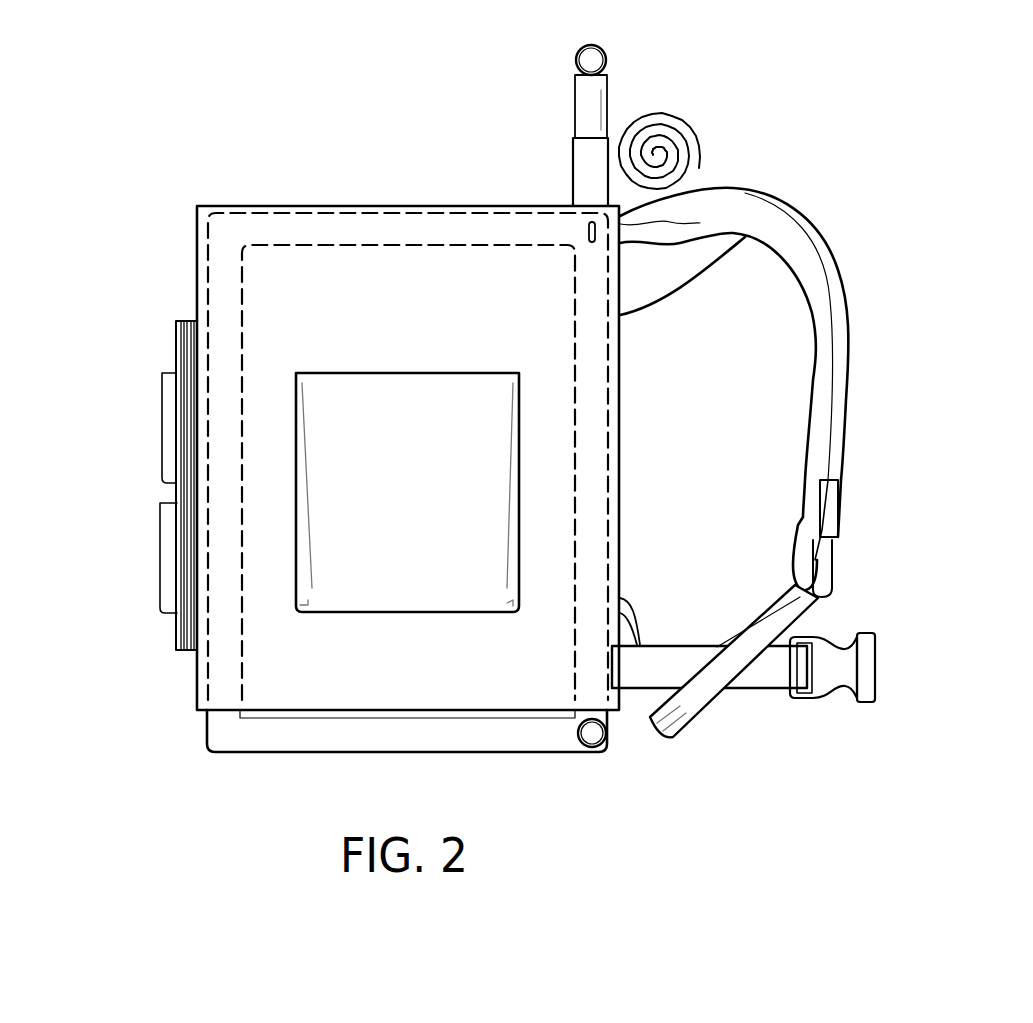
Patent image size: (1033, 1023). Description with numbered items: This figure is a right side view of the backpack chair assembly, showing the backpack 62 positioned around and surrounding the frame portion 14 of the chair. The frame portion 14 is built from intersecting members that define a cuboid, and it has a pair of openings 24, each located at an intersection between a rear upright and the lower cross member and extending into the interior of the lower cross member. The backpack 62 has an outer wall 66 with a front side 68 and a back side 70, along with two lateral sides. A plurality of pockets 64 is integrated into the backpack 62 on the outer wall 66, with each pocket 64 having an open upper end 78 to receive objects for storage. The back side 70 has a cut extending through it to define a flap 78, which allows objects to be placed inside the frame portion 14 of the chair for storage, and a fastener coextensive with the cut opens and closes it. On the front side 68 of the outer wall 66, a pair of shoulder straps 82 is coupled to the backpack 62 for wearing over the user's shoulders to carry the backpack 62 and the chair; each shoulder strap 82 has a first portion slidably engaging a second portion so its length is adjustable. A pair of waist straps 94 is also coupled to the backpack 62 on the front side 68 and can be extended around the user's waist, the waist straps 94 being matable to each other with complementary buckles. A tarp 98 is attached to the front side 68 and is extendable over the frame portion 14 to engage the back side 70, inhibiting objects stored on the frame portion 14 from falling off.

The frame portion 14 is at (242, 360).
The openings 24 is at (592, 747).
The backpack 62 is at (318, 290).
The pockets 64 is at (162, 421).
The outer wall 66 is at (475, 278).
The front side 68 is at (762, 240).
The back side 70 is at (193, 670).
The flap 78 is at (171, 373).
The shoulder straps 82 is at (810, 230).
The waist straps 94 is at (760, 688).
The tarp 98 is at (660, 128).